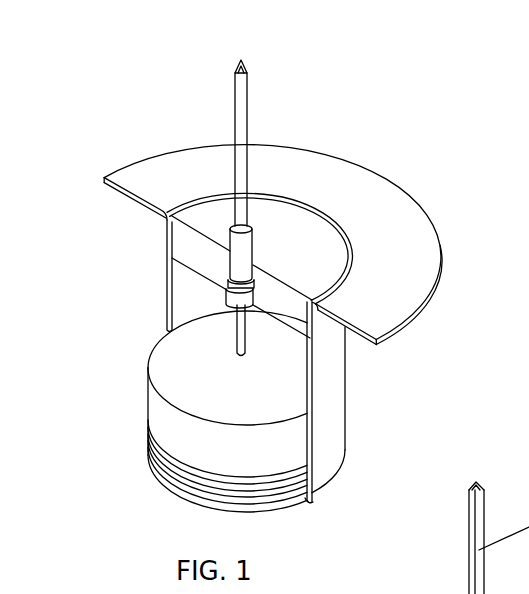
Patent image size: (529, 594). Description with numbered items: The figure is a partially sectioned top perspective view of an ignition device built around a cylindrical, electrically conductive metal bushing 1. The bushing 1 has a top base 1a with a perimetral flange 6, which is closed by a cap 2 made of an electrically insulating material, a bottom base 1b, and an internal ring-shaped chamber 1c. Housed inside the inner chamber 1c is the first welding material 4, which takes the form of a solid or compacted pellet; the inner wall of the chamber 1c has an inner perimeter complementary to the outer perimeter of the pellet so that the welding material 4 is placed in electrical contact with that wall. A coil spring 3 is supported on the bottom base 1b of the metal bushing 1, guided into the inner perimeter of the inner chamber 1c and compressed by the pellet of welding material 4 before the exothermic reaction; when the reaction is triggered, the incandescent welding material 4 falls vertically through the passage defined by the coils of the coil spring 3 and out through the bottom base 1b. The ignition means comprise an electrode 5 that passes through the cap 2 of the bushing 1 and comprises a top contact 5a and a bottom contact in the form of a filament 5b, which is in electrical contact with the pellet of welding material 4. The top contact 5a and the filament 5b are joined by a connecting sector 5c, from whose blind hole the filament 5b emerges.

The metal bushing 1 is at (328, 434).
The top base 1a is at (345, 233).
The bottom base 1b is at (308, 503).
The internal ring-shaped chamber 1c is at (202, 298).
The cap 2 is at (188, 246).
The coil spring 3 is at (167, 480).
The first welding material 4 is at (175, 430).
The electrode 5 is at (276, 228).
The top contact 5a is at (242, 132).
The filament 5b is at (240, 335).
The connecting sector 5c is at (247, 247).
The perimetral flange 6 is at (398, 277).